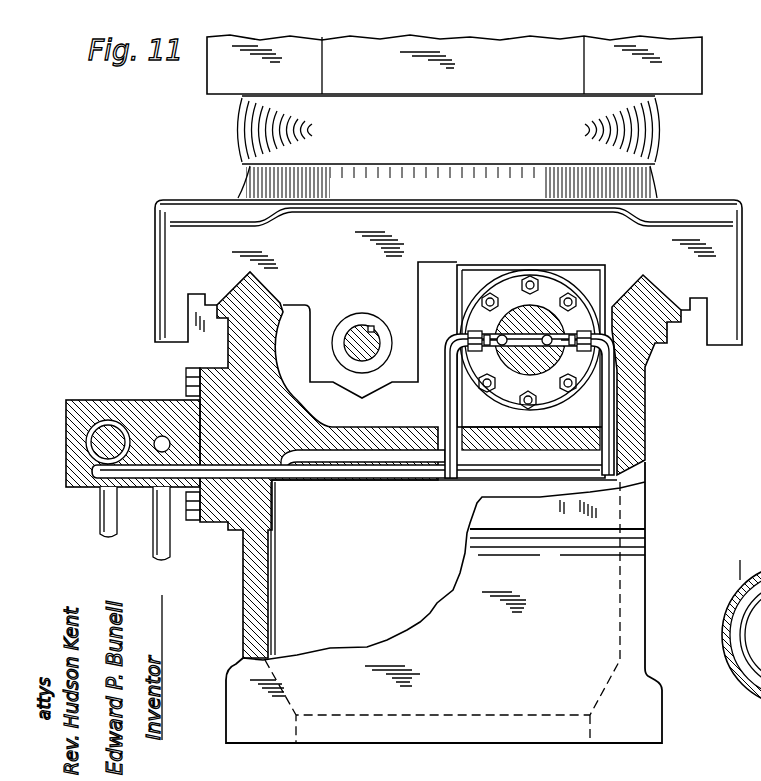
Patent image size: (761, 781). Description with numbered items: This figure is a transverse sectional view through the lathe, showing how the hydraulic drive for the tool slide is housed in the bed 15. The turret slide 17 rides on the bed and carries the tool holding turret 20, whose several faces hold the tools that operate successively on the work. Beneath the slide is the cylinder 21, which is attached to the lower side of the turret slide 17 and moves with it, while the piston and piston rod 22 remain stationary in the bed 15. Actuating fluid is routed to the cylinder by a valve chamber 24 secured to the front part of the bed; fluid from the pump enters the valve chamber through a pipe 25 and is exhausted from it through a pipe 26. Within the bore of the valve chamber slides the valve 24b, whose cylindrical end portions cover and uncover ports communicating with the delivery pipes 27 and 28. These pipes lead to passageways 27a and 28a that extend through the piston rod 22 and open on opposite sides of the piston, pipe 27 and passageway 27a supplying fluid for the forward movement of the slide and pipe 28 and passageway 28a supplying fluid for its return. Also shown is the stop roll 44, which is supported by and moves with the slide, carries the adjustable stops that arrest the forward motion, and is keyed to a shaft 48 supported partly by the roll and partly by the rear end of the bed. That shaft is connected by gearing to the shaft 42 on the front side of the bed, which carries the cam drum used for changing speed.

The bed 15 is at (630, 576).
The turret slide 17 is at (708, 203).
The tool holding turret 20 is at (690, 62).
The cylinder 21 is at (558, 288).
The piston and piston rod 22 is at (516, 300).
The valve chamber 24 is at (133, 415).
The valve 24b is at (108, 425).
The pipe 25 is at (100, 514).
The pipe 26 is at (158, 514).
The pipe 27 is at (445, 413).
The passageway 27a is at (484, 332).
The pipe 28 is at (547, 472).
The passageway 28a is at (565, 352).
The shaft 42 is at (760, 690).
The stop roll 44 is at (352, 326).
The shaft 48 is at (373, 330).